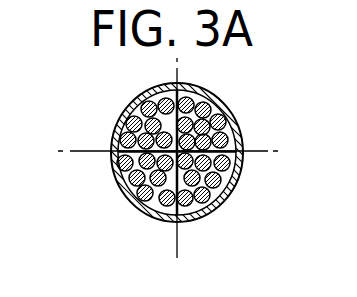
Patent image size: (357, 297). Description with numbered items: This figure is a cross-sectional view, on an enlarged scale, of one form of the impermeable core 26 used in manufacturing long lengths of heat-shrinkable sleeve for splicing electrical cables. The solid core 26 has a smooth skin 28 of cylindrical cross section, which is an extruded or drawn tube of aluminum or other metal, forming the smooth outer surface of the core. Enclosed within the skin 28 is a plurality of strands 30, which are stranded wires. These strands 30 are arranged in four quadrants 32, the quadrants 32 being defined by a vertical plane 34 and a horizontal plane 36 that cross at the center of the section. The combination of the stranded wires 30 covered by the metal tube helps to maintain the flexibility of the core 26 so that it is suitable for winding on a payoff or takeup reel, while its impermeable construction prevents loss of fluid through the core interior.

The impermeable core 26 is at (243, 112).
The smooth skin 28 is at (117, 122).
The strands 30 is at (132, 118).
The quadrants 32 is at (212, 180).
The vertical plane 34 is at (176, 240).
The horizontal plane 36 is at (90, 152).